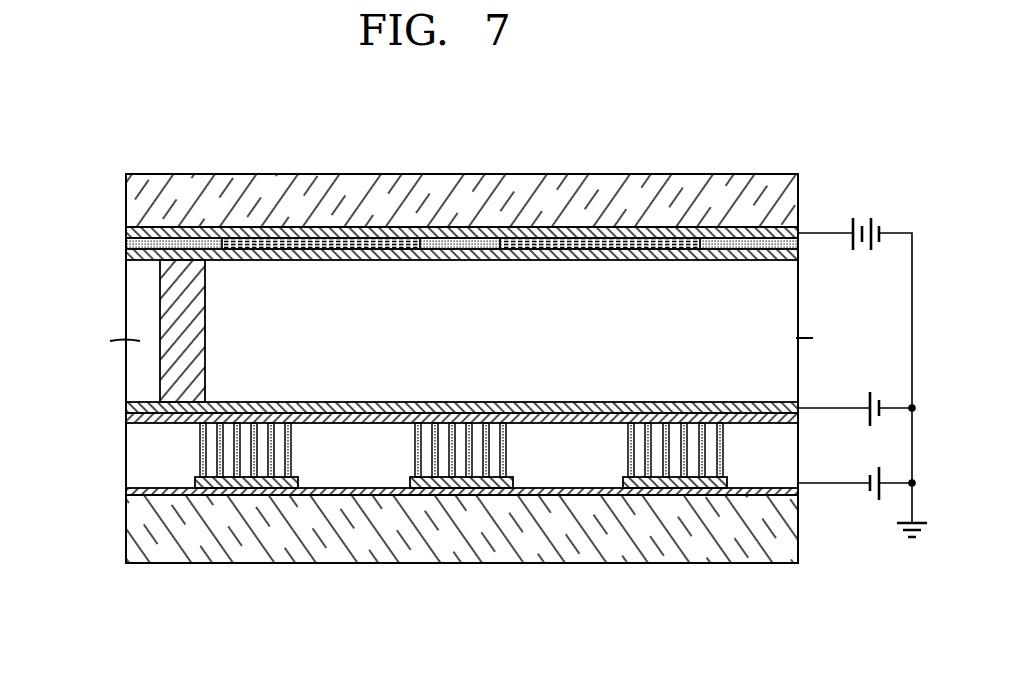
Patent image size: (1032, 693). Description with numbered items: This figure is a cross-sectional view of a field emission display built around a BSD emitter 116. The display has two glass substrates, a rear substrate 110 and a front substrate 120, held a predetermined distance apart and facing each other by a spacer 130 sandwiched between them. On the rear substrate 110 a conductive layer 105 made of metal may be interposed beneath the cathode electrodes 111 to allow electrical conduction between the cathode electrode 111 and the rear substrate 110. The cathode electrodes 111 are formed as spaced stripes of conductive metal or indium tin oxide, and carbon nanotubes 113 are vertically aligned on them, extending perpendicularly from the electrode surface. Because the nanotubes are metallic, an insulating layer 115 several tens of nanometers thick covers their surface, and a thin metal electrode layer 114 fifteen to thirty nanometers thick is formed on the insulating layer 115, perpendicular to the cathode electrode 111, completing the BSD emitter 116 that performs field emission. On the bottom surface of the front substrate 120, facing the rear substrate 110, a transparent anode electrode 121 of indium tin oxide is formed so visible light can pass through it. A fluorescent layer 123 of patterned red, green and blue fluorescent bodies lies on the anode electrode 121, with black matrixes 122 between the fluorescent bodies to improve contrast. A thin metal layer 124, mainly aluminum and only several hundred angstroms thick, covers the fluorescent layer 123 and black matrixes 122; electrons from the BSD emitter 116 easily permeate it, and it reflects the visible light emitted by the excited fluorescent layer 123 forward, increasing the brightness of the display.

The conductive layer 105 is at (128, 490).
The rear substrate 110 is at (130, 545).
The cathode electrode 111 is at (198, 480).
The carbon nanotubes 113 is at (202, 445).
The thin metal electrode layer 114 is at (128, 405).
The insulating layer 115 is at (128, 416).
The BSD emitter 116 is at (420, 368).
The front substrate 120 is at (128, 190).
The anode electrode 121 is at (128, 229).
The black matrixes 122 is at (323, 240).
The fluorescent layer 123 is at (185, 240).
The thin metal layer 124 is at (128, 256).
The spacer 130 is at (165, 312).